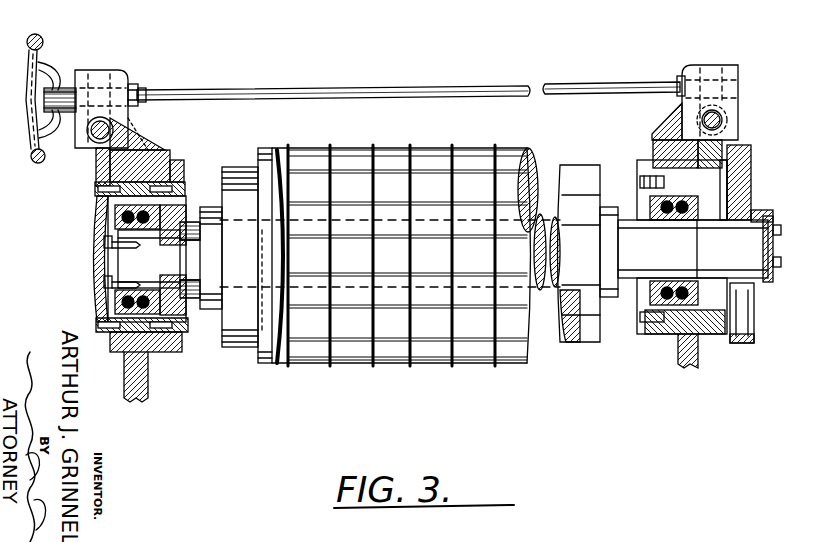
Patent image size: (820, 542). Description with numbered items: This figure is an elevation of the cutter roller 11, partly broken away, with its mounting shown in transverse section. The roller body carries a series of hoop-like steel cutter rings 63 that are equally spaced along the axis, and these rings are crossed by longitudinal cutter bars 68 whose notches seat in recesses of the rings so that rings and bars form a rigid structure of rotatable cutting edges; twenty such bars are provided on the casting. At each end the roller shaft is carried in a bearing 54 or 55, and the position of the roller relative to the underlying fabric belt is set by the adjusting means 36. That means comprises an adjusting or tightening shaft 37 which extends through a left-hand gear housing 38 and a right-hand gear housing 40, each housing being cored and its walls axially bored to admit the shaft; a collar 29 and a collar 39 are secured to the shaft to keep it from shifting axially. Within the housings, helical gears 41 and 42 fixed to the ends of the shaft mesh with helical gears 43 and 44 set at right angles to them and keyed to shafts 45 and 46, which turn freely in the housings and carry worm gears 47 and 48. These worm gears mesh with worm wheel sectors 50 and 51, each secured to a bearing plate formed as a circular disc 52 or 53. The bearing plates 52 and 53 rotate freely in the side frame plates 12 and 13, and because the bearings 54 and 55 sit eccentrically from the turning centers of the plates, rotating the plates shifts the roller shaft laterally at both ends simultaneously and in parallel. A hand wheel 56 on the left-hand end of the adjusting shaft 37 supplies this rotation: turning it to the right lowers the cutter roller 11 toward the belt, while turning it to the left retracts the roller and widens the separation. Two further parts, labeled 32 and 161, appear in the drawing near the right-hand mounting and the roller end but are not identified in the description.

The cutter roller 11 is at (352, 360).
The side frame plate 12 is at (140, 370).
The side frame plate 13 is at (678, 362).
The collar 29 is at (146, 95).
The flange plate 32 is at (754, 336).
The adjusting means 36 is at (742, 343).
The adjusting shaft 37 is at (345, 90).
The left-hand gear housing 38 is at (134, 84).
The collar 39 is at (677, 84).
The right-hand gear housing 40 is at (740, 132).
The helical gear 41 is at (100, 70).
The helical gear 42 is at (735, 70).
The helical gear 43 is at (72, 146).
The helical gear 44 is at (722, 110).
The shaft 45 is at (90, 140).
The shaft 46 is at (727, 122).
The worm gear 47 is at (96, 165).
The worm gear 48 is at (690, 112).
The worm wheel sector 50 is at (96, 186).
The worm wheel sector 51 is at (748, 158).
The bearing plate 52 is at (97, 212).
The bearing plate 53 is at (740, 184).
The bearing 54 is at (178, 186).
The bearing 55 is at (755, 216).
The hand wheel 56 is at (43, 37).
The cutter ring 63 is at (420, 363).
The cutter bar 68 is at (395, 312).
The disc 161 is at (600, 305).